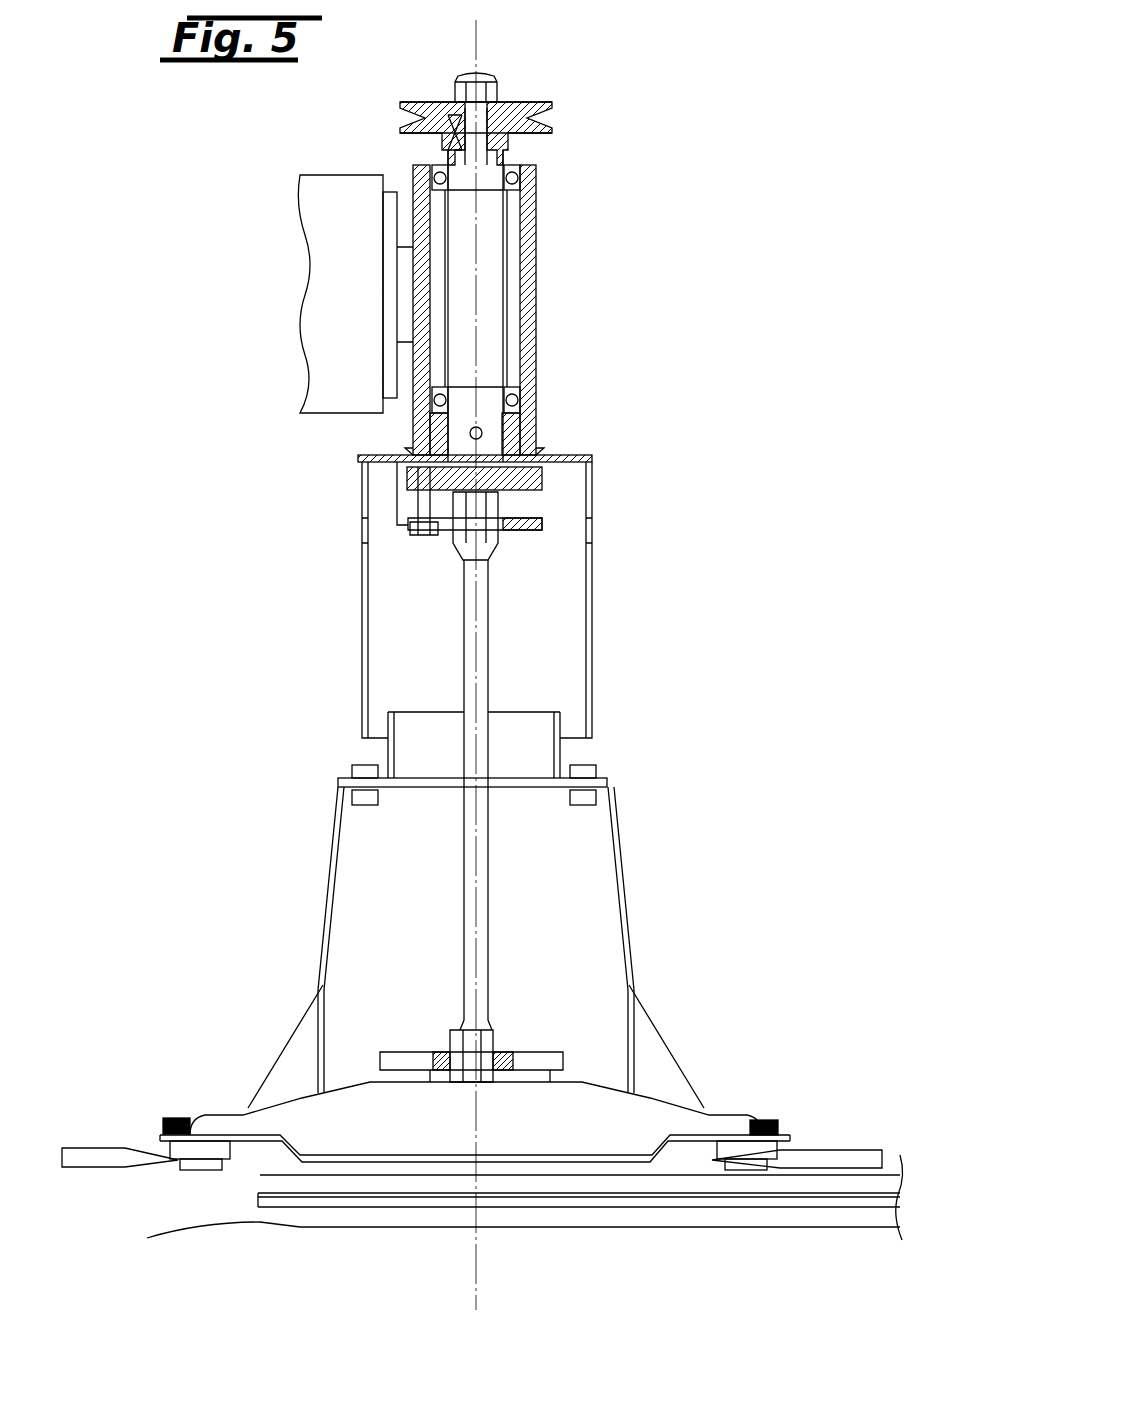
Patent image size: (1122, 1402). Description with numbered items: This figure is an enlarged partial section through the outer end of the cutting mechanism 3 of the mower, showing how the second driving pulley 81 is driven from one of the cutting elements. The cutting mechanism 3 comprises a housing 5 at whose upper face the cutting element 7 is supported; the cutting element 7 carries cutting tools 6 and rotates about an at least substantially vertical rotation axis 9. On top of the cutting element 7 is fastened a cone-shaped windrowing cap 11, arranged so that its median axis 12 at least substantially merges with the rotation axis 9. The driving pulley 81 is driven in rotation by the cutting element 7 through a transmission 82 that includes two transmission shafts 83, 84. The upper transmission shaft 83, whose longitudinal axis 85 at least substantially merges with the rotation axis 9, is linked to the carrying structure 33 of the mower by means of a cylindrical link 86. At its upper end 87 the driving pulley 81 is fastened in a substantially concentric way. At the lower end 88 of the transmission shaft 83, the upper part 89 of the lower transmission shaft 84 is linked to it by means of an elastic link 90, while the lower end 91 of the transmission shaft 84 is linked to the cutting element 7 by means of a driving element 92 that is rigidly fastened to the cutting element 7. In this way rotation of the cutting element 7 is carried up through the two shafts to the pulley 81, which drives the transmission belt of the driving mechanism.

The cutting mechanism 3 is at (498, 1241).
The housing 5 is at (300, 1196).
The cutting tools 6 is at (130, 1158).
The cutting element 7 is at (690, 1115).
The rotation axis 9 is at (478, 692).
The windrowing cap 11 is at (612, 905).
The median axis 12 is at (478, 940).
The carrying structure 33 is at (330, 315).
The second driving pulley 81 is at (552, 106).
The transmission 82 is at (640, 562).
The transmission shaft 83 is at (498, 82).
The transmission shaft 84 is at (478, 862).
The longitudinal axis 85 is at (478, 352).
The cylindrical link 86 is at (541, 256).
The upper end 87 is at (546, 150).
The lower end 88 is at (556, 446).
The upper part 89 is at (502, 550).
The elastic link 90 is at (510, 497).
The lower end 91 is at (505, 1040).
The driving element 92 is at (563, 1057).